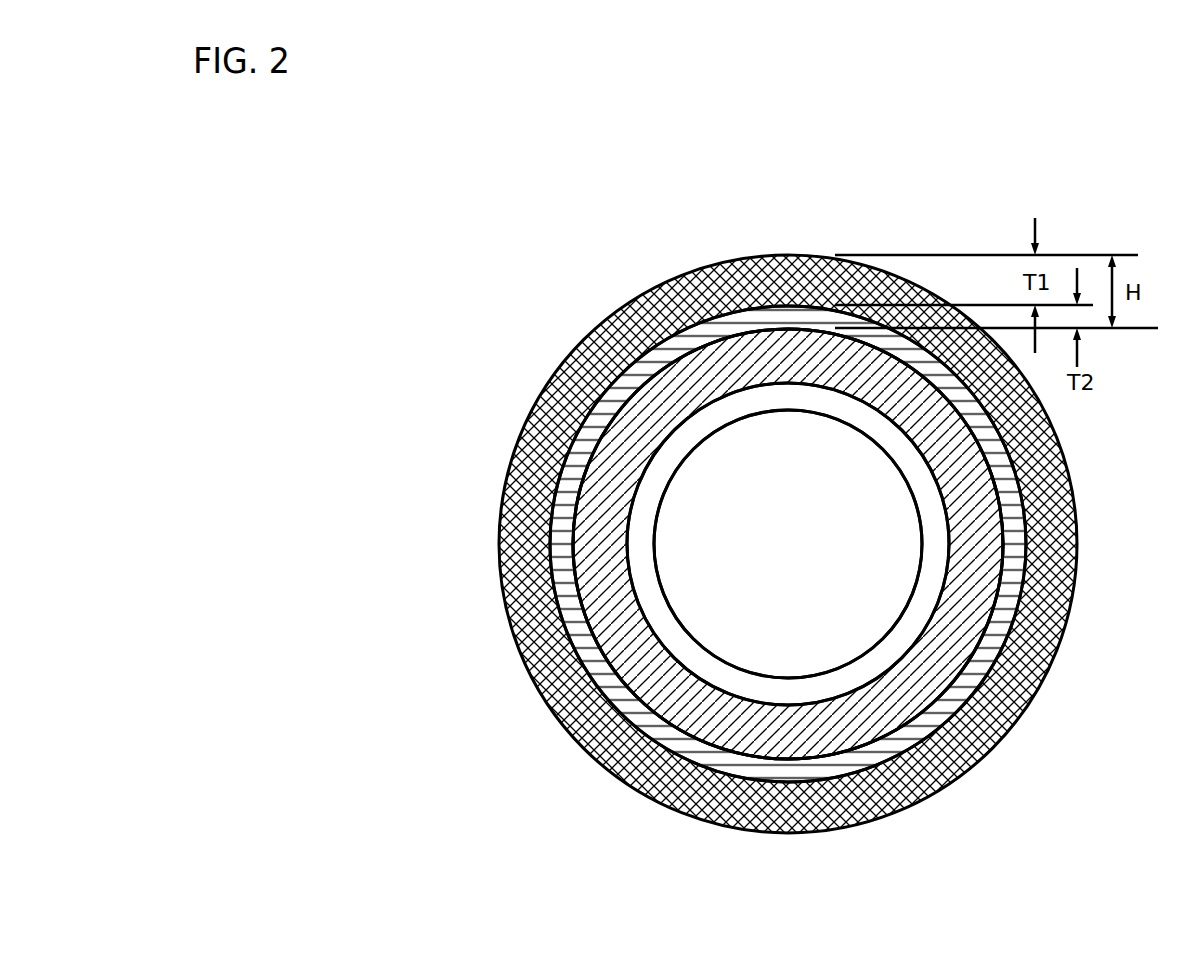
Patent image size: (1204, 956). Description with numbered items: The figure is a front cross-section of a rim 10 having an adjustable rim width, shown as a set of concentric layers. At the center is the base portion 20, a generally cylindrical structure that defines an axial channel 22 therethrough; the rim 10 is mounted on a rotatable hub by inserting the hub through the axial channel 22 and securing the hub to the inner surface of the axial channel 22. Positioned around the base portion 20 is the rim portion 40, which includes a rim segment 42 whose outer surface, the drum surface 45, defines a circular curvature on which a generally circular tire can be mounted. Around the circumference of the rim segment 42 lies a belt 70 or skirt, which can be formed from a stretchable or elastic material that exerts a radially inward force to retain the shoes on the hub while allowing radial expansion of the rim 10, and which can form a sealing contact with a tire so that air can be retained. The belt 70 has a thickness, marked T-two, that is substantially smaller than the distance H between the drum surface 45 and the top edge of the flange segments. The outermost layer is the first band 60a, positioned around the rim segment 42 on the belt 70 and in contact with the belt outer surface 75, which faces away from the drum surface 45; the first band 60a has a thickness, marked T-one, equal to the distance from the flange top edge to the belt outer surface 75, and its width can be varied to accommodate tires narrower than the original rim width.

The rim 10 is at (512, 178).
The base portion 20 is at (630, 562).
The axial channel 22 is at (735, 615).
The rim portion 40 is at (560, 541).
The rim segment 42 is at (590, 517).
The drum surface 45 is at (588, 470).
The first band 60a is at (590, 373).
The belt 70 is at (597, 410).
The belt outer surface 75 is at (570, 445).